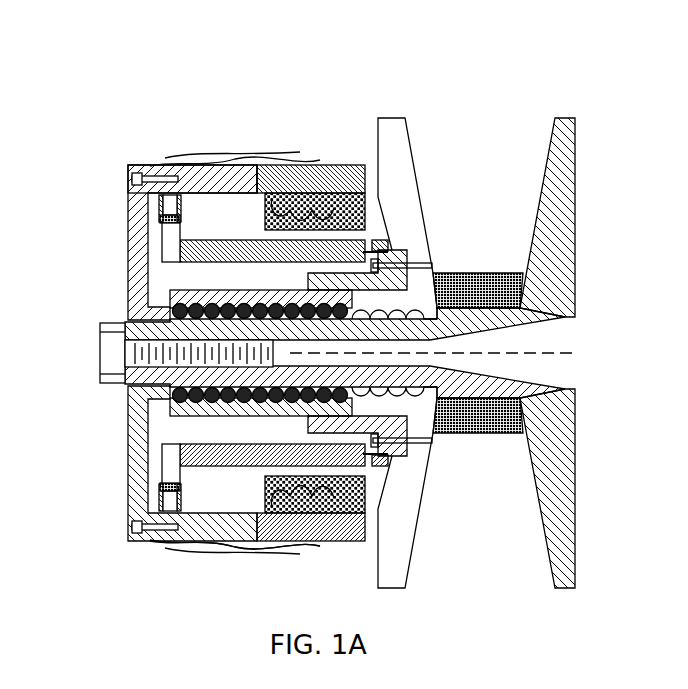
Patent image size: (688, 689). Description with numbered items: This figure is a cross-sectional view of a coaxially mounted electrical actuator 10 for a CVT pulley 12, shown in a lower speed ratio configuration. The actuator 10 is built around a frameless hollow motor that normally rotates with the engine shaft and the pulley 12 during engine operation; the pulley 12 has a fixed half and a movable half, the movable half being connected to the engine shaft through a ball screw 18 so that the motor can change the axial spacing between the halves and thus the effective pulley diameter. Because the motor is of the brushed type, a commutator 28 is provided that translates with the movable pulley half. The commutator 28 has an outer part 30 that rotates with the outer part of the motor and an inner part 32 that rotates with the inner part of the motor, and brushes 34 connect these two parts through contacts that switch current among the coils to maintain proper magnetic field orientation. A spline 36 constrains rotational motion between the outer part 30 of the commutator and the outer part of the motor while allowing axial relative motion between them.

The coaxially mounted electrical actuator 10 is at (330, 307).
The CVT pulley 12 is at (527, 85).
The ball screw 18 is at (156, 406).
The commutator 28 is at (148, 224).
The outer part of the commutator 30 is at (152, 523).
The inner part of the commutator 32 is at (168, 460).
The brushes 34 is at (167, 508).
The spline 36 is at (229, 197).